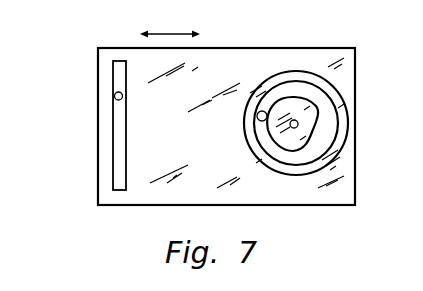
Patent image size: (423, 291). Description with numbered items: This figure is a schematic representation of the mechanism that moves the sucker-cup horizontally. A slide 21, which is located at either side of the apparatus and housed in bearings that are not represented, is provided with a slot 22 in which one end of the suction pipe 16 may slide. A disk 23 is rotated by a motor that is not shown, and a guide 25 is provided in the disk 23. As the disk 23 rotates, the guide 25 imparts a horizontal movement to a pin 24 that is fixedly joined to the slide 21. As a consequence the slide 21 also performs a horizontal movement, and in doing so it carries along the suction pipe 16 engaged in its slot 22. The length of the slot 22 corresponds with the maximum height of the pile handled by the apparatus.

The suction pipe 16 is at (114, 96).
The slide 21 is at (266, 58).
The slot 22 is at (118, 162).
The disk 23 is at (344, 120).
The pin 24 is at (257, 116).
The guide 25 is at (304, 152).